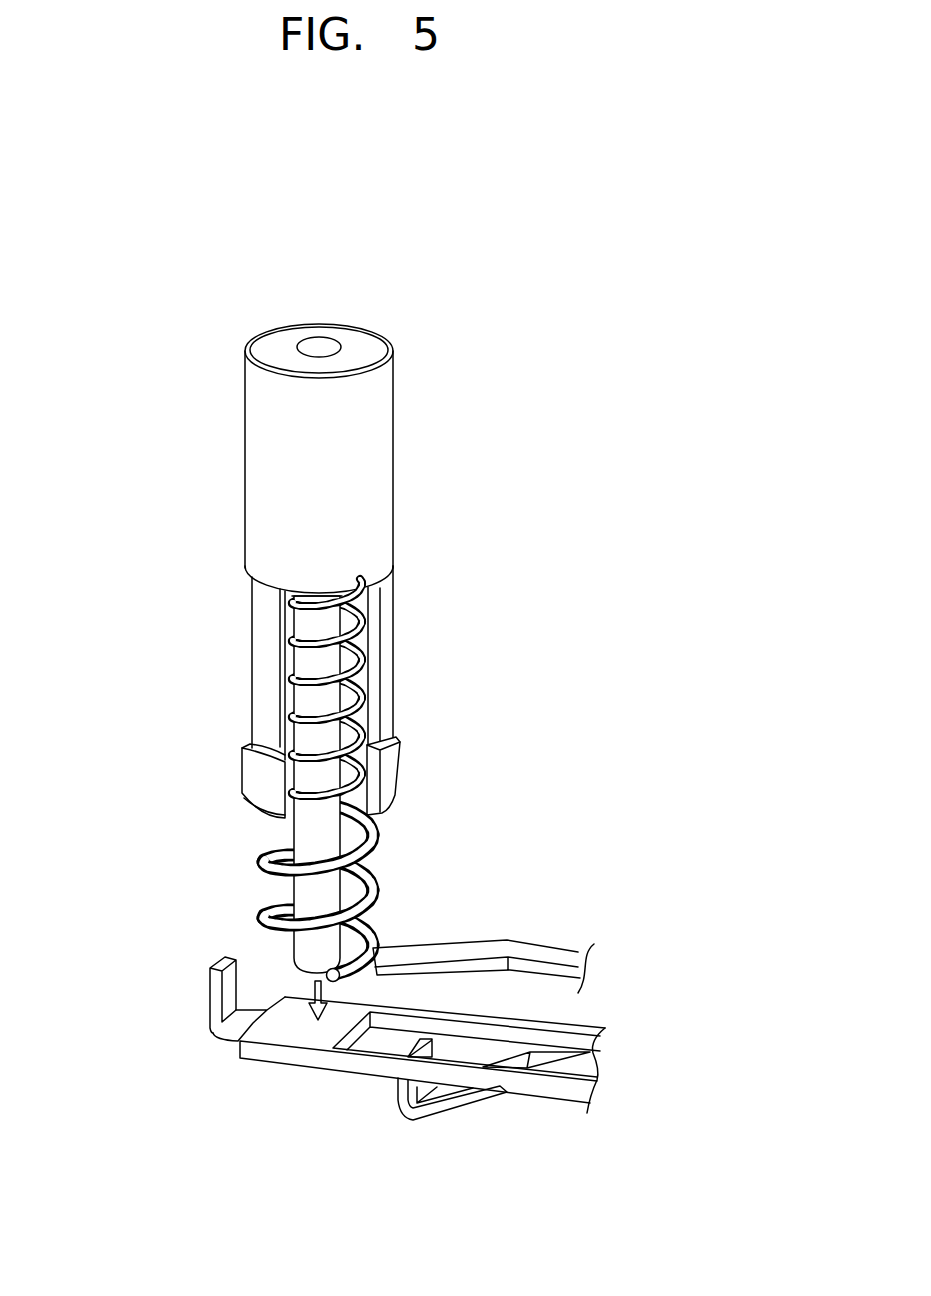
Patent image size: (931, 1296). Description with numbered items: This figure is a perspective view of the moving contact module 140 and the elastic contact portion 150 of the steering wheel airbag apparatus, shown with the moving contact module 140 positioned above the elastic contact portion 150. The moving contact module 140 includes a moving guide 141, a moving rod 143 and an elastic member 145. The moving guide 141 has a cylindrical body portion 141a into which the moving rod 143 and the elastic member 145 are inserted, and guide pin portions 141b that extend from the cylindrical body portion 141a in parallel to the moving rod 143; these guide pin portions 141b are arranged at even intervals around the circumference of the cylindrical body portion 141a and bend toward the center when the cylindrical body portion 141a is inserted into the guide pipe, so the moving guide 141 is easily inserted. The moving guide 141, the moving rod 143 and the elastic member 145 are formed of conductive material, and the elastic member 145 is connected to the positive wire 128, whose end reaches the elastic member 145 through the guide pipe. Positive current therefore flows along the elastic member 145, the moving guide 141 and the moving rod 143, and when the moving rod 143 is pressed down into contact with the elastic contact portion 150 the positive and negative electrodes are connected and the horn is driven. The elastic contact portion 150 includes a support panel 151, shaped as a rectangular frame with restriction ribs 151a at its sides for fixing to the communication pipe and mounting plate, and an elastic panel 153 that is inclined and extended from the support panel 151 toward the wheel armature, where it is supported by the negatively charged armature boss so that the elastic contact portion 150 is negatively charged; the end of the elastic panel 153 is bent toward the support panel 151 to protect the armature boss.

The moving contact module 140 is at (412, 311).
The moving guide 141 is at (122, 445).
The cylindrical body portion 141a is at (271, 470).
The guide pin portions 141b is at (267, 665).
The moving rod 143 is at (325, 677).
The elastic member 145 is at (378, 835).
The positive wire 128 is at (532, 957).
The elastic contact portion 150 is at (255, 1085).
The support panel 151 is at (298, 1035).
The restriction ribs 151a is at (208, 992).
The elastic panel 153 is at (468, 1098).